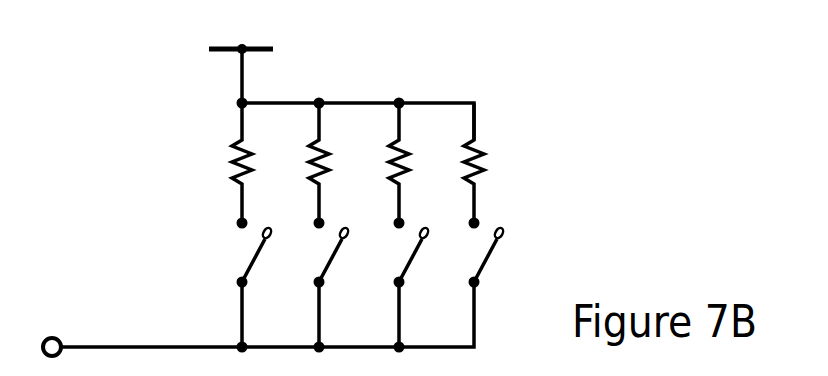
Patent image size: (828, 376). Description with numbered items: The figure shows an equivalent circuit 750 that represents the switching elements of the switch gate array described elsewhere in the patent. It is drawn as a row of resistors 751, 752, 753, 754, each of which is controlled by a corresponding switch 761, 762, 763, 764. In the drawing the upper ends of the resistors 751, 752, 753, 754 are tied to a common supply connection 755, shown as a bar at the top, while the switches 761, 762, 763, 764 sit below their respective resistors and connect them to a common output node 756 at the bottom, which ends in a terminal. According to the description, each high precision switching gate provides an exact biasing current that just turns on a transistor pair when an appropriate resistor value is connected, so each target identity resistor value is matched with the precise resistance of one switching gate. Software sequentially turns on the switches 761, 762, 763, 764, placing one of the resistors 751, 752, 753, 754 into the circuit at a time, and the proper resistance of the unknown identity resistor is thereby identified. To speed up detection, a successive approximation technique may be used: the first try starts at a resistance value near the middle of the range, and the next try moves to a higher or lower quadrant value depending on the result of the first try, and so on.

The programmable resistor network 750 is at (558, 128).
The resistor 751 is at (480, 186).
The resistor 752 is at (388, 156).
The resistor 753 is at (329, 157).
The resistor 754 is at (235, 144).
The supply terminal 755 is at (234, 46).
The output node 756 is at (128, 344).
The switch 761 is at (262, 256).
The switch 762 is at (330, 268).
The switch 763 is at (412, 255).
The switch 764 is at (496, 252).